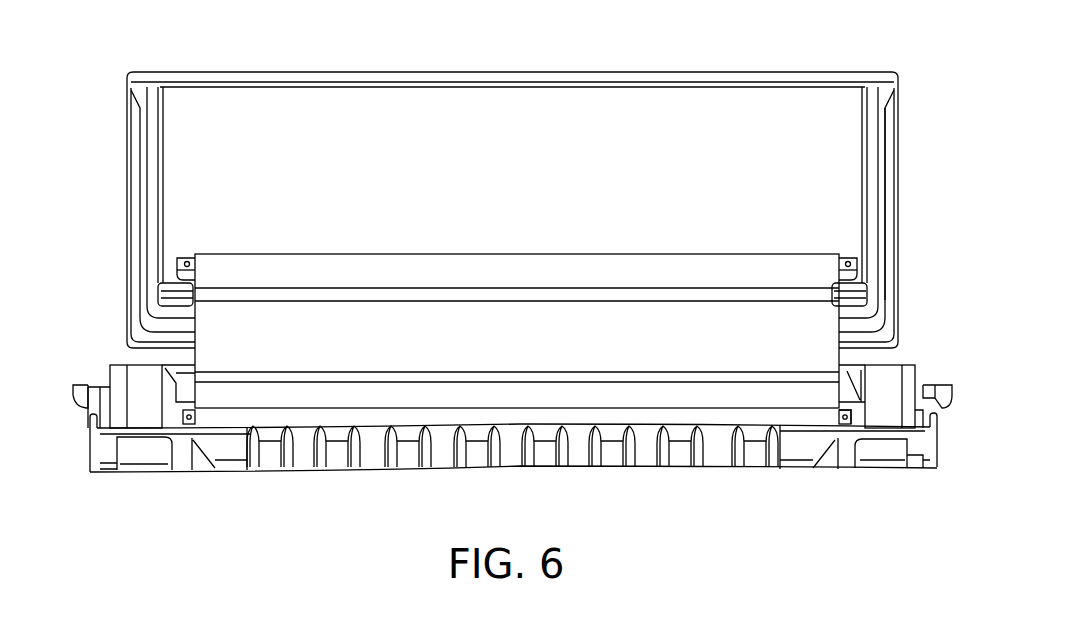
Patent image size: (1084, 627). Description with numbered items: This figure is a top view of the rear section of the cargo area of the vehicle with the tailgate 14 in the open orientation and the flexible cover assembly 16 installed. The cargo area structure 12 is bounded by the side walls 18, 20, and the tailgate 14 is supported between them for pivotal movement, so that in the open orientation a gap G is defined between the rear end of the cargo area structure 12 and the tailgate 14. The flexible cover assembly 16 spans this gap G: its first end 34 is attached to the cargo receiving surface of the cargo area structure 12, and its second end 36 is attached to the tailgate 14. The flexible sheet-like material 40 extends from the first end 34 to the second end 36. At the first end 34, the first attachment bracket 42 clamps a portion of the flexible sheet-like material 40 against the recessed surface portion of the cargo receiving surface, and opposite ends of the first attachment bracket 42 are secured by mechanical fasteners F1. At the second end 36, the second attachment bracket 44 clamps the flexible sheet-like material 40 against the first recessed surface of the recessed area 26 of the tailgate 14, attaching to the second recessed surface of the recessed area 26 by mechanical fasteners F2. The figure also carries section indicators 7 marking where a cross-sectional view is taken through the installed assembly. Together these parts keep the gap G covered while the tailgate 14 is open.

The section line 7- 7 is at (377, 55).
The cargo area structure 12 is at (488, 473).
The tailgate 14 is at (705, 74).
The flexible cover assembly 16 is at (410, 246).
The side wall 18 is at (941, 385).
The side wall 20 is at (79, 382).
The recessed area 26 is at (866, 276).
The first end 34 is at (312, 418).
The second end 36 is at (658, 272).
The flexible sheet-like material 40 is at (482, 335).
The first attachment bracket 42 is at (848, 421).
The second attachment bracket 44 is at (844, 256).
The gap G is at (145, 357).
The mechanical fasteners F1 is at (838, 416).
The mechanical fasteners F2 is at (187, 260).